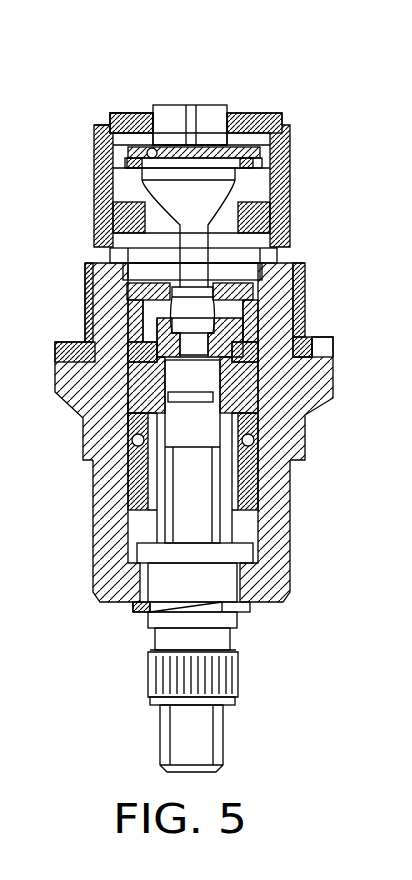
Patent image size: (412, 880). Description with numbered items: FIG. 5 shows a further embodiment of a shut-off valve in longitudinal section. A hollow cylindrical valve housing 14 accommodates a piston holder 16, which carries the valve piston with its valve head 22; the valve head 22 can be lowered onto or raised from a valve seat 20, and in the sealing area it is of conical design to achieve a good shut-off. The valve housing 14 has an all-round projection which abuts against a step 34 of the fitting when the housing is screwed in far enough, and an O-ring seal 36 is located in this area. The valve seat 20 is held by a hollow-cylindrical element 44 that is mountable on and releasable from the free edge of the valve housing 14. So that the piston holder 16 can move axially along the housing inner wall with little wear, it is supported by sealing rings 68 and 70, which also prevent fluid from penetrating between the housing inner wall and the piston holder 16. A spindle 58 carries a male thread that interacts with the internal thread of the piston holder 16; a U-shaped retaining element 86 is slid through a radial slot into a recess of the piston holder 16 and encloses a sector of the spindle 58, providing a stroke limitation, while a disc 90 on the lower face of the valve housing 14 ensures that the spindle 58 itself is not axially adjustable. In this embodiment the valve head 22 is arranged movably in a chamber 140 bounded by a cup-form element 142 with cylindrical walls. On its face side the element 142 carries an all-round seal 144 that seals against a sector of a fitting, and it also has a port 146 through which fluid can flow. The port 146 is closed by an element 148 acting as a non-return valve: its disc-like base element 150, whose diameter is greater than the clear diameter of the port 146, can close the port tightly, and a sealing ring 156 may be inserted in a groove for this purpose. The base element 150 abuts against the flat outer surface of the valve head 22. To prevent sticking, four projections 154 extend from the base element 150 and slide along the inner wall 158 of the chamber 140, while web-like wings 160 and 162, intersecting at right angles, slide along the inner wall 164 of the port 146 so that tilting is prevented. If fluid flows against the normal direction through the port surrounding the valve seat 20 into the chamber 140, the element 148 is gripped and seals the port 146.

The valve housing 14 is at (262, 577).
The piston holder 16 is at (293, 322).
The valve seat 20 is at (275, 250).
The valve head 22 is at (290, 208).
The step 34 is at (297, 380).
The O-ring seal 36 is at (320, 348).
The hollow-cylindrical element 44 is at (303, 275).
The spindle 58 is at (210, 520).
The sealing ring 68 is at (135, 445).
The sealing ring 70 is at (127, 347).
The retaining element 86 is at (130, 410).
The disc 90 is at (137, 610).
The chamber 140 is at (288, 133).
The cup-form element 142 is at (295, 148).
The all-round seal 144 is at (93, 118).
The port 146 is at (243, 112).
The non-return valve element 148 is at (143, 113).
The disc-like base element 150 is at (112, 222).
The projections 154 is at (100, 172).
The sealing ring 156 is at (123, 150).
The inner wall of the chamber 158 is at (265, 175).
The projection 160 is at (203, 115).
The projection 162 is at (187, 140).
The inner wall of the port 164 is at (137, 115).